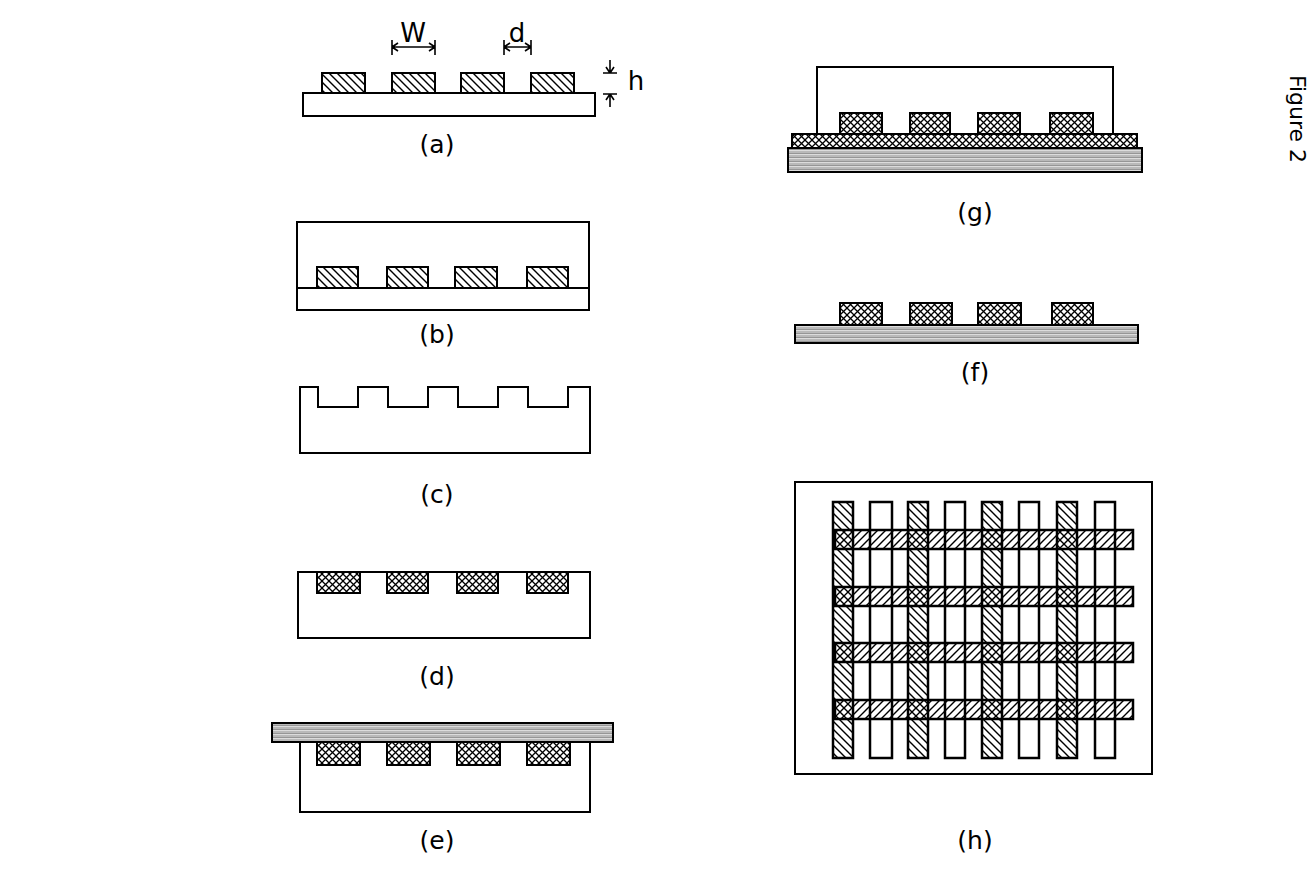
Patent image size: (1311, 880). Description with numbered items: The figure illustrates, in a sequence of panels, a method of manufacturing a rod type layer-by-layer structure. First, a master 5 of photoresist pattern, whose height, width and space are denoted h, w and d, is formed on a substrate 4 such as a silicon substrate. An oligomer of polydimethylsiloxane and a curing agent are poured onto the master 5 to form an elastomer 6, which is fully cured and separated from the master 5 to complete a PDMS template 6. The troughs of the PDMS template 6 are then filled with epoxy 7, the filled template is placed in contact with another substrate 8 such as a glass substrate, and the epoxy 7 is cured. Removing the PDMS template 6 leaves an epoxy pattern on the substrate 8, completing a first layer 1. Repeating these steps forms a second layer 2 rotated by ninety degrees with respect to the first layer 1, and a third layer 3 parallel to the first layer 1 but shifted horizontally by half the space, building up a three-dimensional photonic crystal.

The first layer 1 is at (1140, 140).
The second layer 2 is at (838, 118).
The third layer 3 is at (1131, 797).
The substrate 4 is at (303, 115).
The master 5 is at (565, 73).
The PDMS template 6 is at (437, 234).
The epoxy 7 is at (332, 572).
The substrate 8 is at (545, 724).